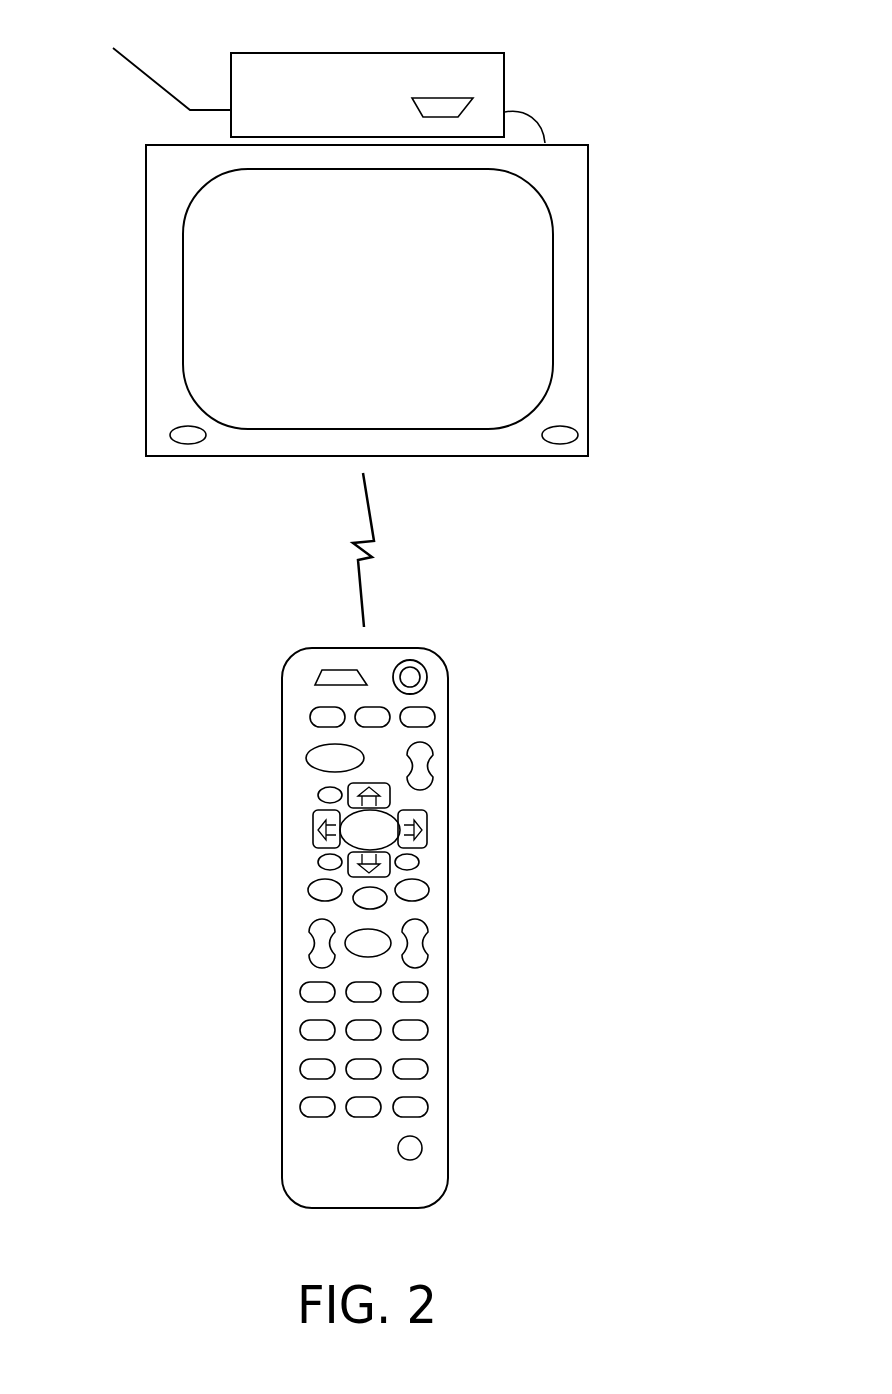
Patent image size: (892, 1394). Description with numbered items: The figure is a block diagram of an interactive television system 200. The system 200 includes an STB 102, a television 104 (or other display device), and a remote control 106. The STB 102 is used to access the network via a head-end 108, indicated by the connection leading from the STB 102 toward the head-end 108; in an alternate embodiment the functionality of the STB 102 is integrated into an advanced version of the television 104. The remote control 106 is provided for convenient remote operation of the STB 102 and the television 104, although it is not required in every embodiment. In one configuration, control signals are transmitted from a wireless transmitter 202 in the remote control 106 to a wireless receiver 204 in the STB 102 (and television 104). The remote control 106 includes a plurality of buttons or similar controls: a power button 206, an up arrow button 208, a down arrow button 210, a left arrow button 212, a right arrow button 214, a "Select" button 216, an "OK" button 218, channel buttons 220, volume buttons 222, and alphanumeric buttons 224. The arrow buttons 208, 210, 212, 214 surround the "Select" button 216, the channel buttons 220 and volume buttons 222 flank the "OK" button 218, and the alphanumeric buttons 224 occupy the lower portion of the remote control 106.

The interactive television system 200 is at (777, 238).
The STB 102 is at (388, 98).
The television 104 is at (367, 300).
The remote control 106 is at (448, 930).
The head-end 108 is at (150, 67).
The wireless transmitter 202 is at (315, 679).
The wireless receiver 204 is at (440, 98).
The power button 206 is at (428, 673).
The up arrow button 208 is at (390, 795).
The down arrow button 210 is at (348, 872).
The left arrow button 212 is at (312, 830).
The right arrow button 214 is at (428, 832).
The "Select" button 216 is at (392, 807).
The "OK" button 218 is at (363, 928).
The channel buttons 220 is at (310, 956).
The volume buttons 222 is at (428, 952).
The alphanumeric buttons 224 is at (305, 975).